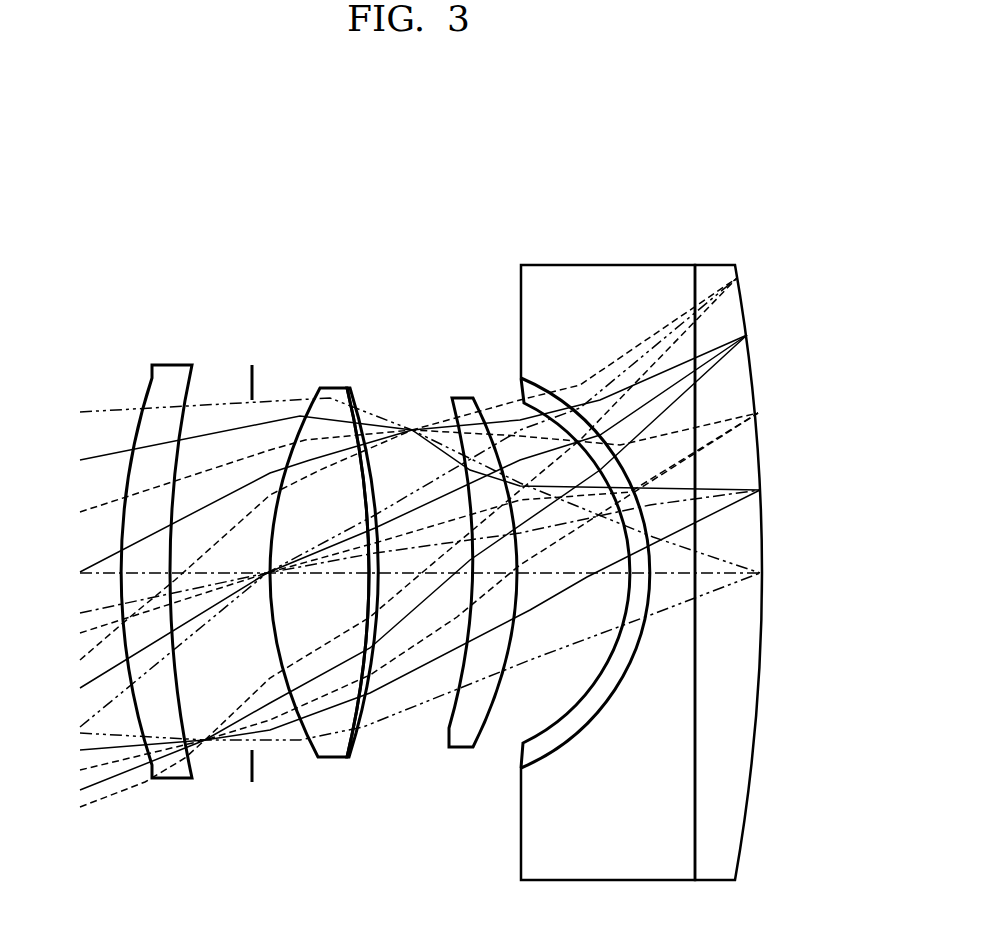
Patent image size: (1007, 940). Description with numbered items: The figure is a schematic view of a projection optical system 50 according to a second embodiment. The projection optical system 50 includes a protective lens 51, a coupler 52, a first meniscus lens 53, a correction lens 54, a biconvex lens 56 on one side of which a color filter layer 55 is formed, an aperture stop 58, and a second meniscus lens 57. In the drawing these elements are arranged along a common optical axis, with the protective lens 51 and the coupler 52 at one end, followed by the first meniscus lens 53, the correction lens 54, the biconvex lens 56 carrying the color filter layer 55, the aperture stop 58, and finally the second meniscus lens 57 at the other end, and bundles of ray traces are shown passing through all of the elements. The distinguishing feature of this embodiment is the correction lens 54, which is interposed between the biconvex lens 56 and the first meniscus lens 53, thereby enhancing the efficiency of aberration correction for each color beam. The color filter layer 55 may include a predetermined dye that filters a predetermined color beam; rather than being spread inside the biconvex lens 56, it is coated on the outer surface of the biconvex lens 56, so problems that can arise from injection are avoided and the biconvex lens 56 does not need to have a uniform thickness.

The projection optical system 50 is at (467, 210).
The protective lens 51 is at (715, 273).
The coupler 52 is at (611, 273).
The first meniscus lens 53 is at (524, 393).
The correction lens 54 is at (462, 402).
The color filter layer 55 is at (351, 392).
The biconvex lens 56 is at (323, 390).
The second meniscus lens 57 is at (172, 365).
The aperture stop 58 is at (243, 388).